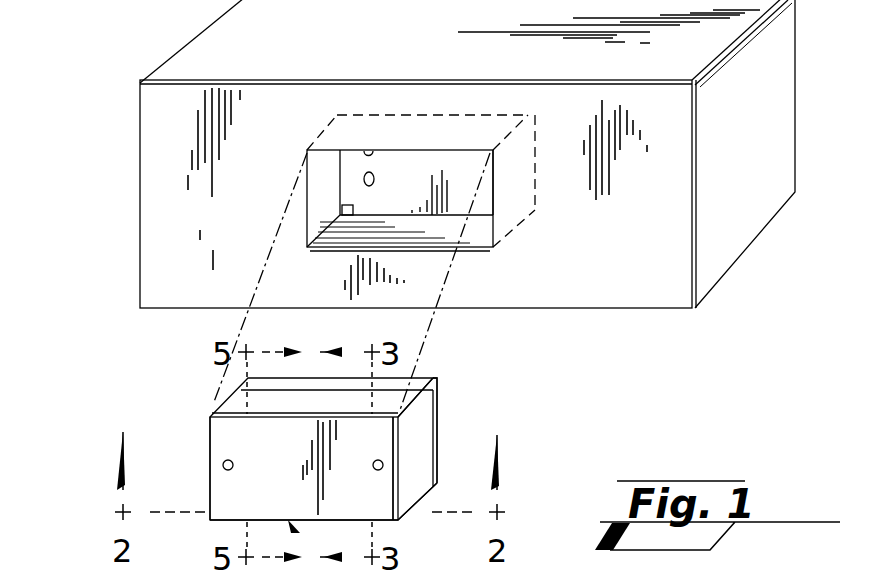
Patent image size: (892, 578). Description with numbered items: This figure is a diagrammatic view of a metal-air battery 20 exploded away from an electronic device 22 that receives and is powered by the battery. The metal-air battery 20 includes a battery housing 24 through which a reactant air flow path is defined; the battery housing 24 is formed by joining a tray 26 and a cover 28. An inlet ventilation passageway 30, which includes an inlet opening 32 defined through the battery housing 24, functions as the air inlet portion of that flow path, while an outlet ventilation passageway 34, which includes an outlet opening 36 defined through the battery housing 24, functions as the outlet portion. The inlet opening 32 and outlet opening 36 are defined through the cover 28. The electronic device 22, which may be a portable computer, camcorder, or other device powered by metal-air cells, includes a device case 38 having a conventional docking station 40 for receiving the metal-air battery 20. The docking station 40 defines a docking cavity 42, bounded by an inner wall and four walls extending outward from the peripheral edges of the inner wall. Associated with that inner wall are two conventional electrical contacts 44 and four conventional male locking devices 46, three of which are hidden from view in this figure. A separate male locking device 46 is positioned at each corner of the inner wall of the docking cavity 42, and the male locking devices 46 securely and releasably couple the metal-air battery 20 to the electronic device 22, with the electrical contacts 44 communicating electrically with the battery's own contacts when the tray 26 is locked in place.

The metal-air battery 20 is at (172, 385).
The electronic device 22 is at (108, 182).
The battery housing 24 is at (291, 530).
The tray 26 is at (437, 403).
The cover 28 is at (418, 414).
The inlet ventilation passageway 30 is at (210, 463).
The inlet opening 32 is at (214, 468).
The outlet ventilation passageway 34 is at (404, 468).
The outlet opening 36 is at (380, 467).
The device case 38 is at (130, 213).
The docking station 40 is at (438, 148).
The docking cavity 42 is at (470, 174).
The electrical contacts 44 is at (374, 172).
The male locking devices 46 is at (342, 205).